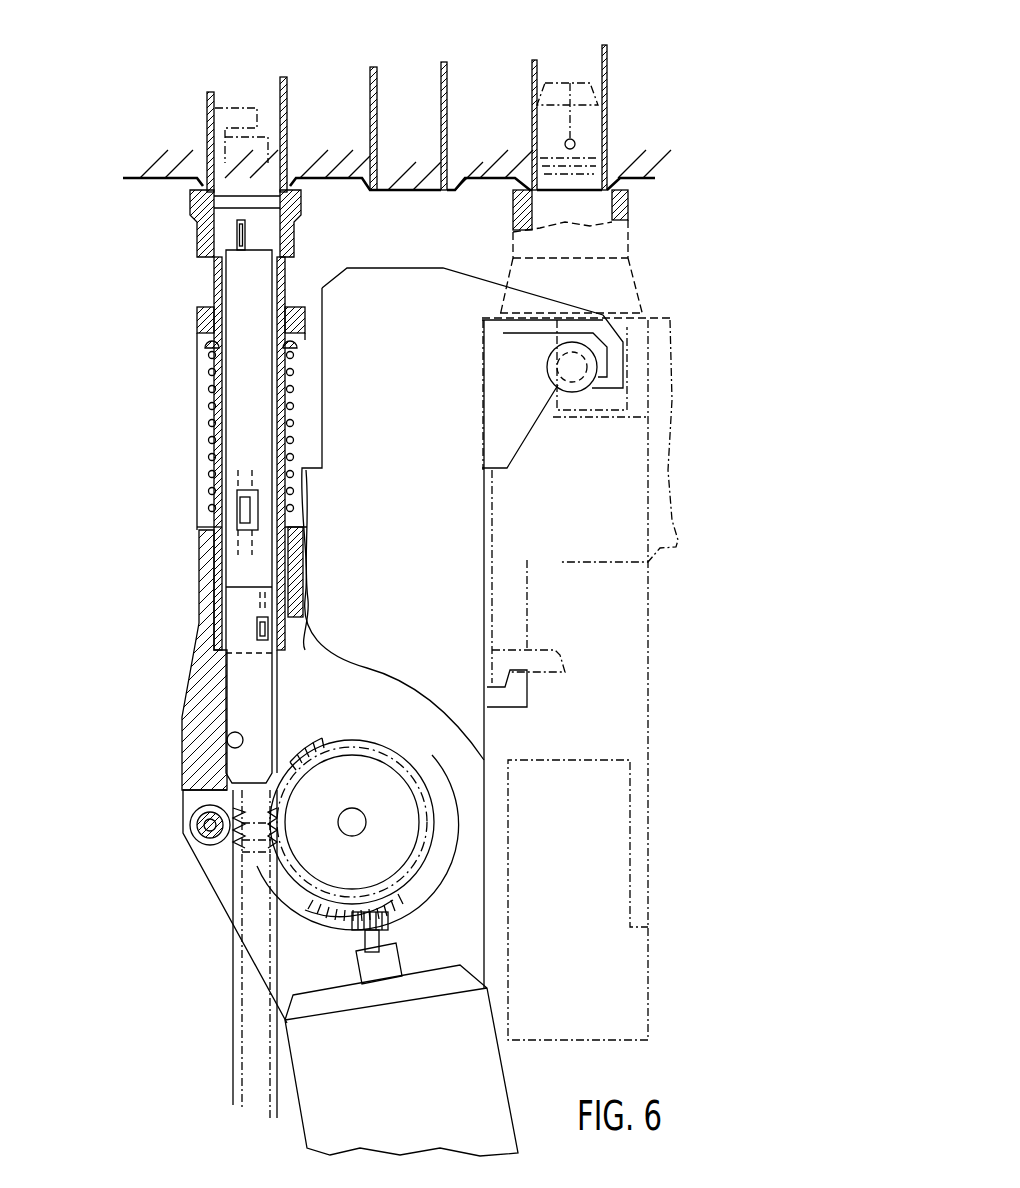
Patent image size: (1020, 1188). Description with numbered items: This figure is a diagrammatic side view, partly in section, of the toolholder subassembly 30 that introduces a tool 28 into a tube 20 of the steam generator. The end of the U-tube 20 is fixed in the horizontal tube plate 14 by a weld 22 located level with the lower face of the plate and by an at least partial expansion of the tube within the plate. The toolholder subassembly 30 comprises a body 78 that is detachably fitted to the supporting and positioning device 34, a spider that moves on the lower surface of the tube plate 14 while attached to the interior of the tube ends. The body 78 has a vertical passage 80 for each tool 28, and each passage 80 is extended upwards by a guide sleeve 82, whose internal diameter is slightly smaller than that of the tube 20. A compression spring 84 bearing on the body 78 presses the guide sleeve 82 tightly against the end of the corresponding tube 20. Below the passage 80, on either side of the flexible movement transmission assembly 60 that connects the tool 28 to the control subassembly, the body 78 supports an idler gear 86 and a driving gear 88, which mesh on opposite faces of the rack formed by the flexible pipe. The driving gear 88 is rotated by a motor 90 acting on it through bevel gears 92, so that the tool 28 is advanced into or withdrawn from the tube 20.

The tube plate 14 is at (349, 127).
The U-tube 20 is at (372, 87).
The weld 22 is at (200, 197).
The tool 28 is at (226, 440).
The toolholder subassembly 30 is at (178, 763).
The supporting and positioning device 34 is at (657, 701).
The flexible movement transmission assembly 60 is at (225, 981).
The body 78 is at (424, 318).
The vertical passage 80 is at (228, 735).
The guide sleeve 82 is at (212, 272).
The compression spring 84 is at (210, 395).
The idler gear 86 is at (195, 830).
The driving gear 88 is at (322, 752).
The motor 90 is at (429, 1058).
The bevel gears 92 is at (392, 915).